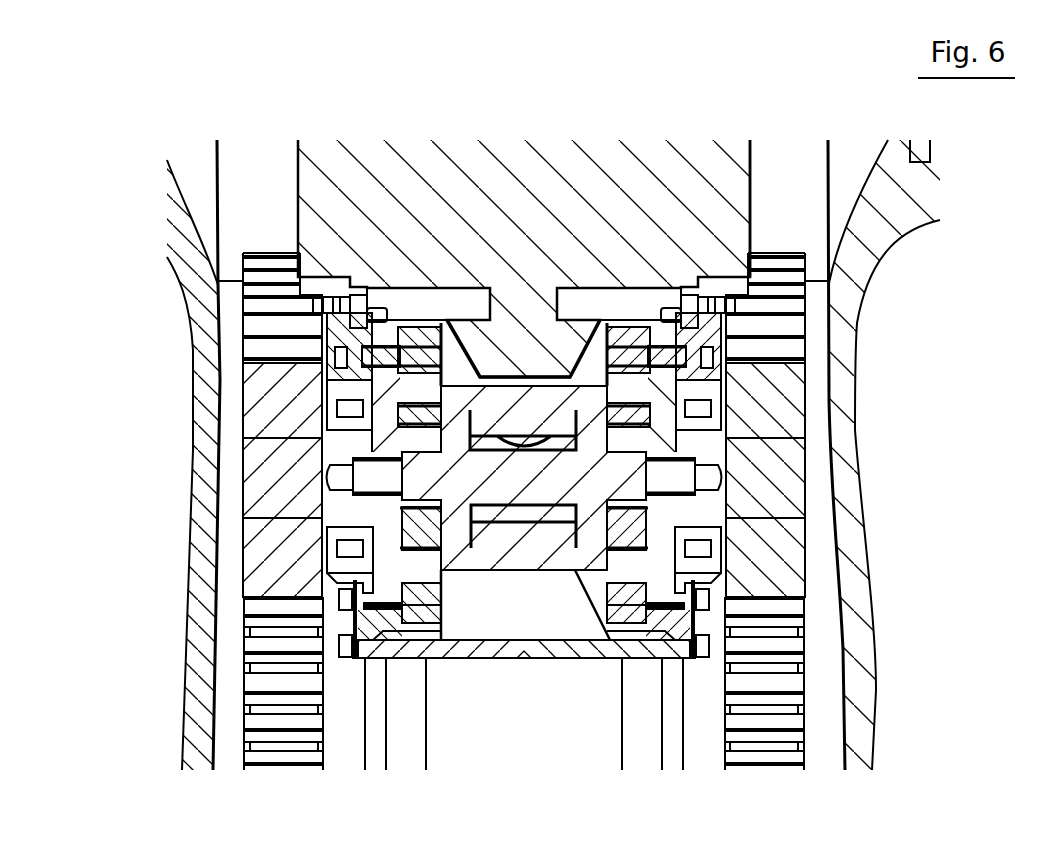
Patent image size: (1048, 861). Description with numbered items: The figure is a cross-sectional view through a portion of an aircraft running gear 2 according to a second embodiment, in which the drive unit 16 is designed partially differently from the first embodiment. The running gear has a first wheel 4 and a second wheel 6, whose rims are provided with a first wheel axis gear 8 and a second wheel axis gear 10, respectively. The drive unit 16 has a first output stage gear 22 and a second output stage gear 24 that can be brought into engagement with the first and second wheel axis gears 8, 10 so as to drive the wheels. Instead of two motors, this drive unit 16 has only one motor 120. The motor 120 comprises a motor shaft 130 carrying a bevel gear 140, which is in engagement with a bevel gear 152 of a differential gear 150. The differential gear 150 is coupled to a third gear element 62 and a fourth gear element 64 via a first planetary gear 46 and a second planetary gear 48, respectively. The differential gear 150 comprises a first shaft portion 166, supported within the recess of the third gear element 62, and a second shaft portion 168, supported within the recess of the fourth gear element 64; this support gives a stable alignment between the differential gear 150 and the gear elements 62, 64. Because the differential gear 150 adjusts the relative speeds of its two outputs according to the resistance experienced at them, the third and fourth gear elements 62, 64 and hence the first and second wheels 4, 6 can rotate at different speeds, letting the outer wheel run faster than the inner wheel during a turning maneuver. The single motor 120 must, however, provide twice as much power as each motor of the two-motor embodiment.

The aircraft running gear 2 is at (110, 116).
The first wheel 4 is at (883, 158).
The second wheel 6 is at (175, 183).
The first wheel axis gear 8 is at (772, 773).
The second wheel axis gear 10 is at (293, 773).
The drive unit 16 is at (765, 155).
The first output stage gear 22 is at (772, 558).
The second output stage gear 24 is at (295, 558).
The first planetary gear 46 is at (616, 662).
The second planetary gear 48 is at (432, 662).
The third gear element 62 is at (774, 489).
The fourth gear element 64 is at (295, 489).
The motor 120 is at (485, 222).
The motor shaft 130 is at (568, 318).
The bevel gear 140 is at (523, 348).
The differential gear 150 is at (524, 513).
The bevel gear 152 is at (602, 373).
The first shaft portion 166 is at (683, 485).
The second shaft portion 168 is at (389, 485).